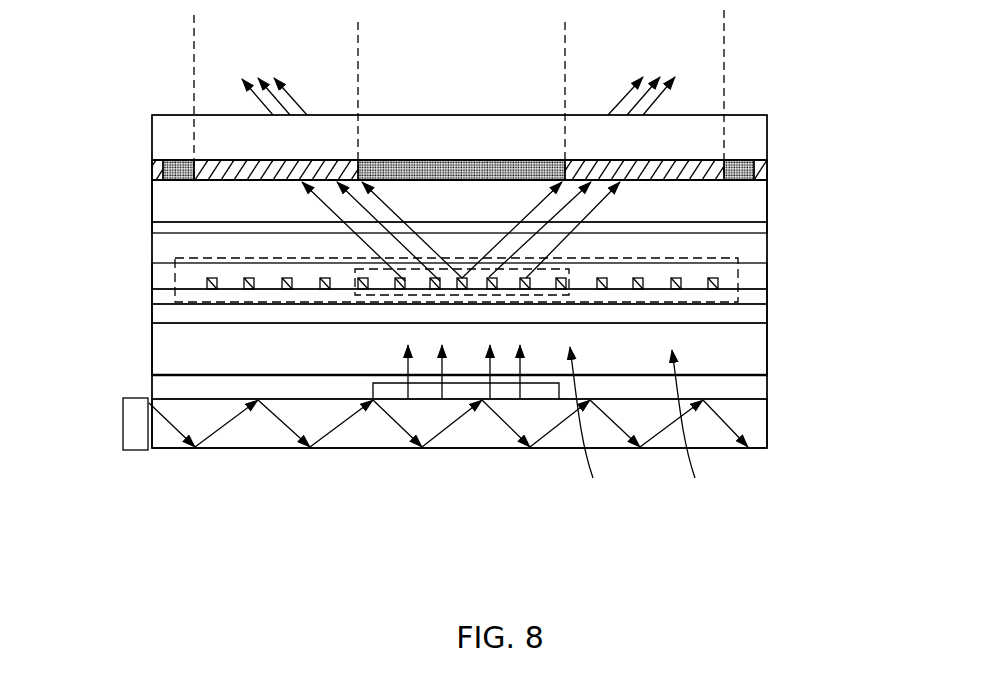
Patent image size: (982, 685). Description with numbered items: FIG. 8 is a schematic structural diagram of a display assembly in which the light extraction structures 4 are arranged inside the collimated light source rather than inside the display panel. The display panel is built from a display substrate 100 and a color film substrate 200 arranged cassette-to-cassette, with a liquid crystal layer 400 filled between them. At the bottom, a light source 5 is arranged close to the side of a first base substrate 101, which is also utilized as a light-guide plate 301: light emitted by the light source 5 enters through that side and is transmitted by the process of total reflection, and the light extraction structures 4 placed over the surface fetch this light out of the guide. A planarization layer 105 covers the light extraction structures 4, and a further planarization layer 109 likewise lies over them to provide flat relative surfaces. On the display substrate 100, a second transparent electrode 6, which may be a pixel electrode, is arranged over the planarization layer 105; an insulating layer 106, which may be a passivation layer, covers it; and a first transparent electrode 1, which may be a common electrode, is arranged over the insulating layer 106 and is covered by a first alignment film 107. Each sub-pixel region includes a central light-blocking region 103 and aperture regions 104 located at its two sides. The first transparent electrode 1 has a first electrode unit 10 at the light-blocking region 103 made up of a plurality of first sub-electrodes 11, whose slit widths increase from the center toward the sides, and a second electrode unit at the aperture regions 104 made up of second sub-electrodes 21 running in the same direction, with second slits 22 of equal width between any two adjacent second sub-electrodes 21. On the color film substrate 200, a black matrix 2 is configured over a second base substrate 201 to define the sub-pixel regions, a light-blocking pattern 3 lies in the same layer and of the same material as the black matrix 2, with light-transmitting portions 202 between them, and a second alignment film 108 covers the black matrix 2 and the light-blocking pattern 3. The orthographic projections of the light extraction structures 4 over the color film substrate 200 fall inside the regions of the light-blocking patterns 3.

The color film substrate 200 is at (120, 168).
The display substrate 100 is at (120, 377).
The second base substrate 201 is at (755, 136).
The black matrix 2 is at (730, 160).
The light transmitting region 202 is at (203, 167).
The light-blocking pattern 3 is at (496, 176).
The aperture regions 104 is at (194, 52).
The light-blocking region 103 is at (565, 52).
The planarization layer 109 is at (760, 203).
The second alignment film 108 is at (750, 227).
The liquid crystal layer 400 is at (742, 247).
The first alignment film 107 is at (750, 270).
The insulating layer 106 is at (742, 297).
The second transparent electrode 6 is at (742, 312).
The first base substrate 101 is at (742, 349).
The planarization layer 105 is at (742, 388).
The light guide plate 301 is at (748, 418).
The light source 5 is at (137, 431).
The light extraction structures 4 is at (436, 392).
The first electrode unit 10 is at (589, 424).
The first transparent electrode 1 is at (685, 428).
The second slits 22 is at (233, 282).
The second sub-electrodes 21 is at (630, 279).
The first sub-electrodes 11 is at (462, 277).